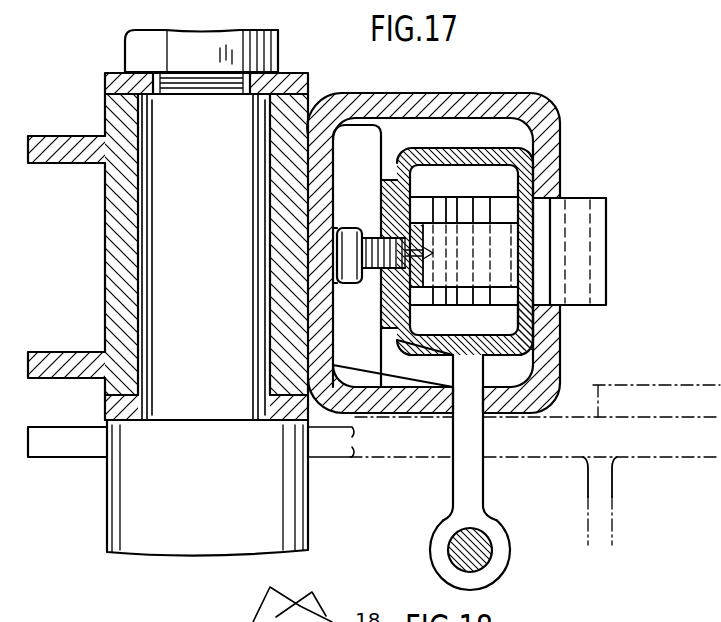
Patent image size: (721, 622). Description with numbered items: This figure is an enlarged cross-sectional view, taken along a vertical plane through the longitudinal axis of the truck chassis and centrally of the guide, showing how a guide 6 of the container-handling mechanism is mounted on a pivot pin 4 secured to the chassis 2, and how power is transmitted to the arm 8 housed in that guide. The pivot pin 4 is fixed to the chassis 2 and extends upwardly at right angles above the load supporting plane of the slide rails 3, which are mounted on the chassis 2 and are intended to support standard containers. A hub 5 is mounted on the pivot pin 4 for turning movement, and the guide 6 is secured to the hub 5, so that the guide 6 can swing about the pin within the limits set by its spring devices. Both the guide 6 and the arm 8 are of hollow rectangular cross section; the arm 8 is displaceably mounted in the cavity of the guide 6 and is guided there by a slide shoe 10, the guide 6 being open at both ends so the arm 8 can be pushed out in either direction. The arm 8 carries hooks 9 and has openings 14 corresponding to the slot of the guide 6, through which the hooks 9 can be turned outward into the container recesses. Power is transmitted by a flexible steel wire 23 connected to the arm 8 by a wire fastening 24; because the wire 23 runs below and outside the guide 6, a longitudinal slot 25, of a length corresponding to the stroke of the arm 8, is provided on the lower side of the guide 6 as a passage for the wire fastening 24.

The chassis 2 is at (566, 452).
The slide rails 3 is at (613, 397).
The pivot pin 4 is at (172, 258).
The hub 5 is at (105, 296).
The guide 6 is at (540, 118).
The arm 8 is at (433, 155).
The hook 9 is at (596, 208).
The slide shoe 10 is at (360, 123).
The opening 14 is at (540, 326).
The flexible steel wire 23 is at (485, 537).
The wire fastening 24 is at (468, 476).
The longitudinal slot 25 is at (452, 417).